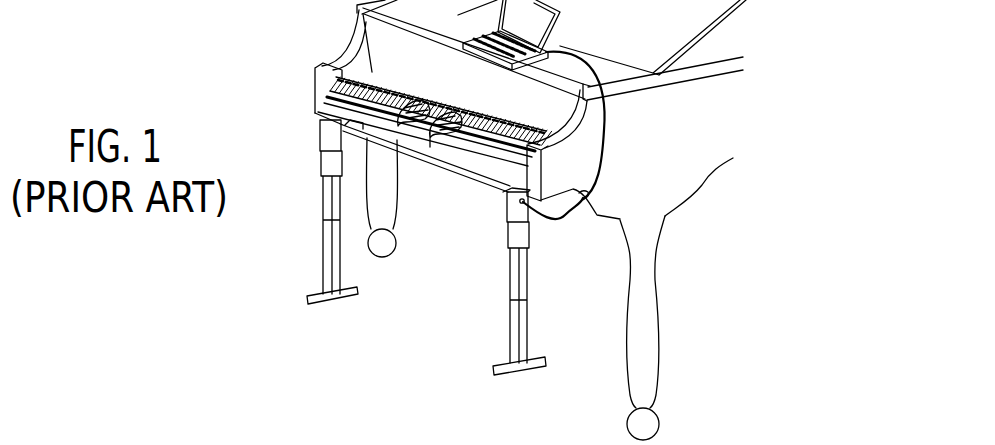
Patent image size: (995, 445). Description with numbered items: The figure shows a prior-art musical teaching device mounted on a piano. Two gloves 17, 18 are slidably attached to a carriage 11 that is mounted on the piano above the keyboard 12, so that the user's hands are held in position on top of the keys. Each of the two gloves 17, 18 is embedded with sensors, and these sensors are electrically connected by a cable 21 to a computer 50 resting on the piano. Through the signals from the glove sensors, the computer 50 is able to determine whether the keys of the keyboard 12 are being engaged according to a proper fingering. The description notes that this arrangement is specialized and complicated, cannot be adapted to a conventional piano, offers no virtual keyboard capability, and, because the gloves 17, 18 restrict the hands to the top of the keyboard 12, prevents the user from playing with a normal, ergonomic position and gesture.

The carriage 11 is at (460, 148).
The keyboard 12 is at (362, 78).
The glove 17 is at (446, 116).
The glove 18 is at (404, 106).
The cable 21 is at (606, 147).
The computer 50 is at (472, 42).